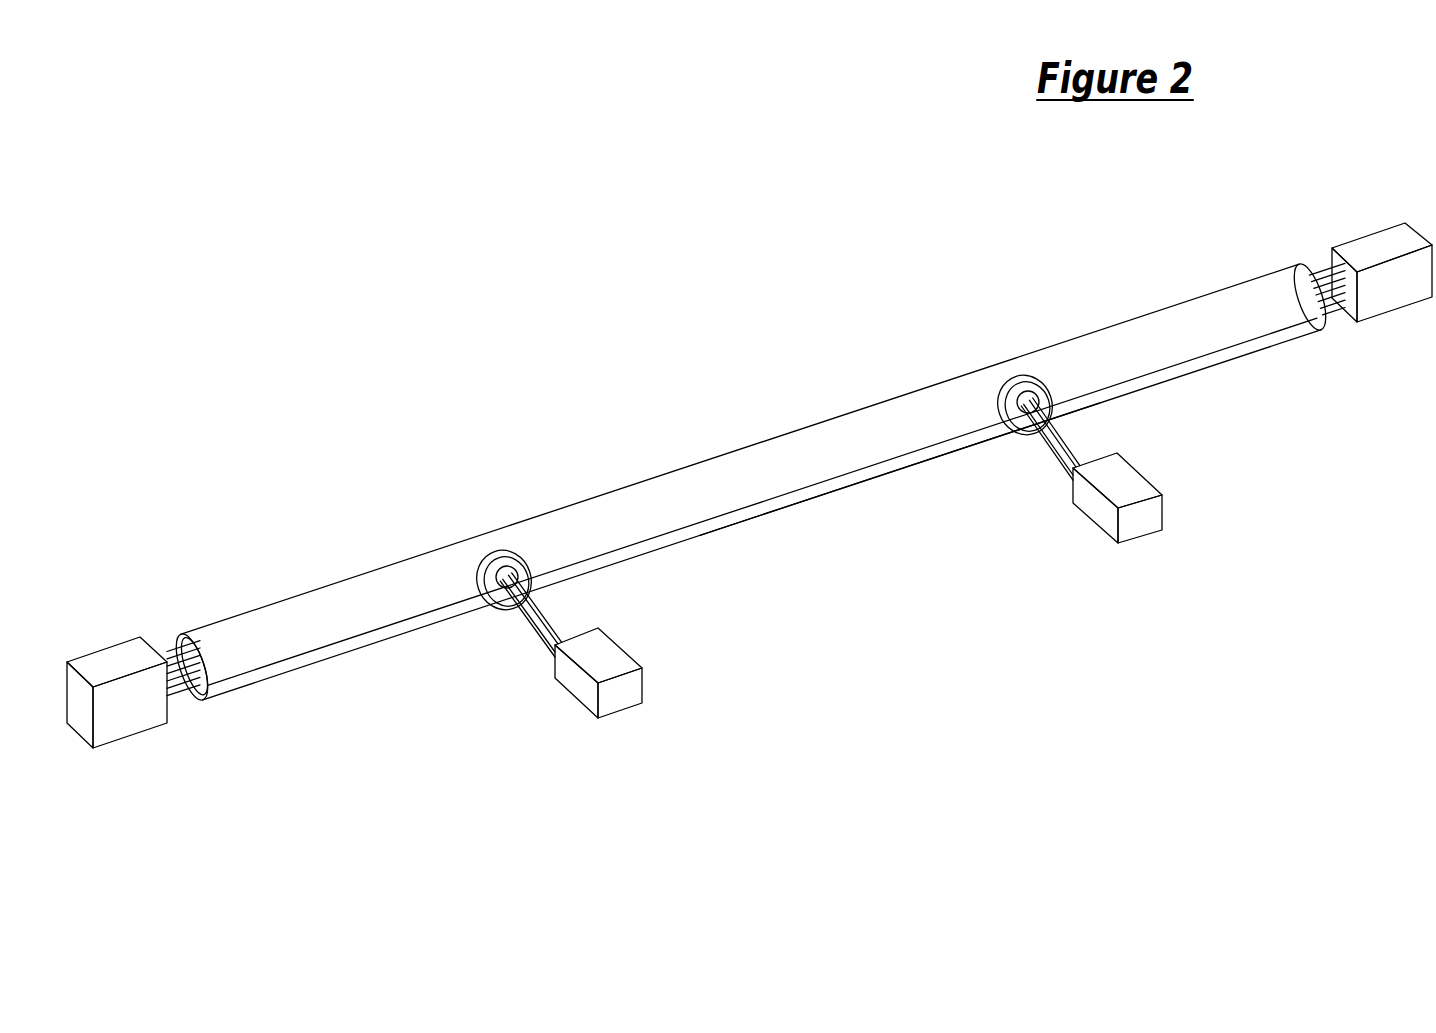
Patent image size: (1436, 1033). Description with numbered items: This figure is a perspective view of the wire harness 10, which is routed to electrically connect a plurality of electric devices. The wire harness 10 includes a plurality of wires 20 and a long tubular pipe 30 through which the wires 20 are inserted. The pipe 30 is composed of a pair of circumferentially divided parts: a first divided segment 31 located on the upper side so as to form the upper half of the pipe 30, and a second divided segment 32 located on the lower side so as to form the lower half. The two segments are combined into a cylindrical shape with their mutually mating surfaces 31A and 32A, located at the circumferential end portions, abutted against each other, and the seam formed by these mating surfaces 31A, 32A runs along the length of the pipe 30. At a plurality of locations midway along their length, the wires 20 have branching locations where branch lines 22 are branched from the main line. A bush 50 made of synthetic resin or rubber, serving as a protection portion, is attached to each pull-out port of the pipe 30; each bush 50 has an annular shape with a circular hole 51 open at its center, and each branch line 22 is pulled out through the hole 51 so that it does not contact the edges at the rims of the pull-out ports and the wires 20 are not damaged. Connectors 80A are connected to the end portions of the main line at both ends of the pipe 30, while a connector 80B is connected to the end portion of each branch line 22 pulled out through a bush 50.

The wire harness 10 is at (731, 332).
The wire 20 is at (1323, 273).
The branch line 22 is at (538, 630).
The pipe 30 is at (697, 473).
The first divided segment 31 is at (1182, 308).
The mating surface 31A is at (785, 493).
The second divided segment 32 is at (1163, 375).
The mating surface 32A is at (867, 463).
The bush 50 is at (488, 598).
The hole 51 is at (512, 558).
The connector 80A is at (80, 708).
The connector 80B is at (643, 687).